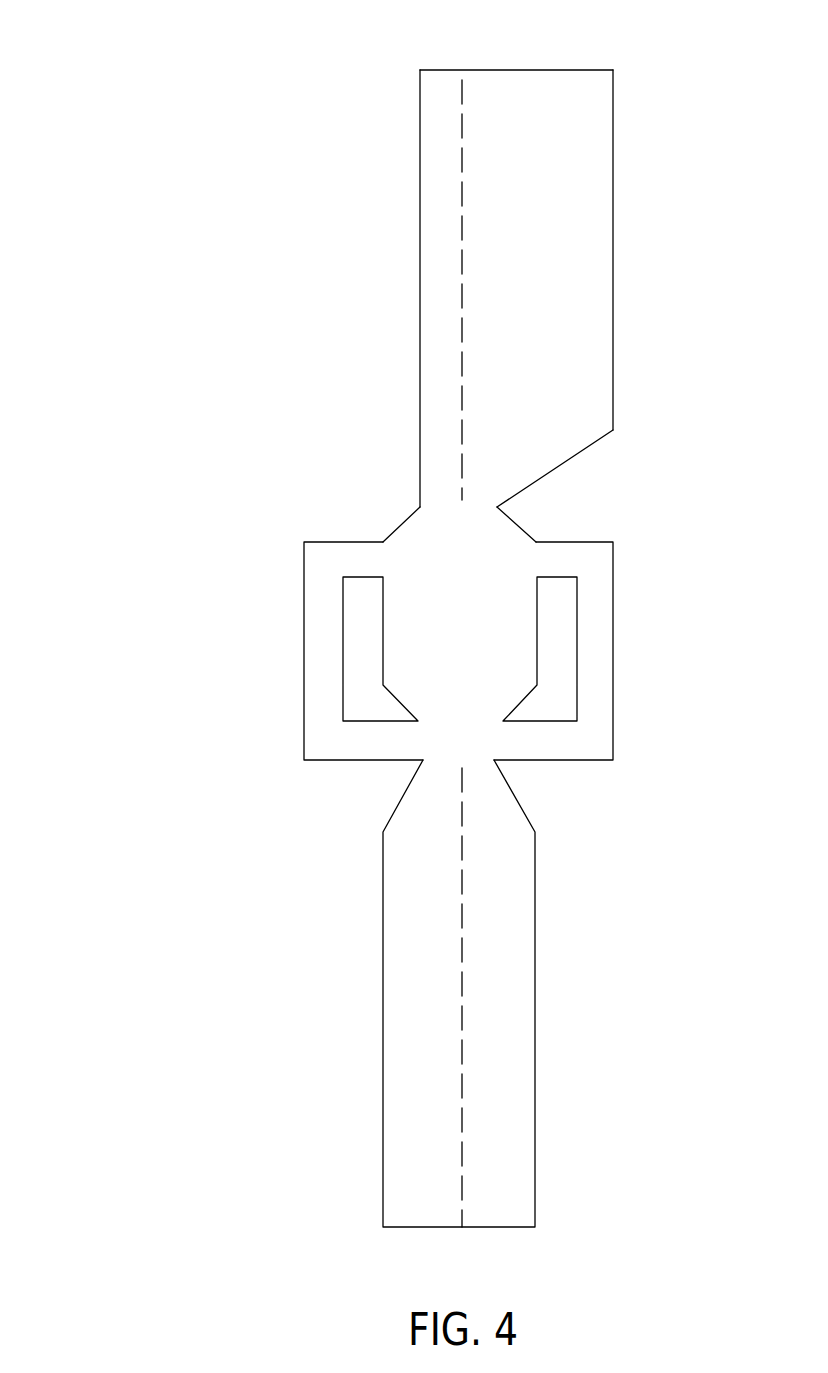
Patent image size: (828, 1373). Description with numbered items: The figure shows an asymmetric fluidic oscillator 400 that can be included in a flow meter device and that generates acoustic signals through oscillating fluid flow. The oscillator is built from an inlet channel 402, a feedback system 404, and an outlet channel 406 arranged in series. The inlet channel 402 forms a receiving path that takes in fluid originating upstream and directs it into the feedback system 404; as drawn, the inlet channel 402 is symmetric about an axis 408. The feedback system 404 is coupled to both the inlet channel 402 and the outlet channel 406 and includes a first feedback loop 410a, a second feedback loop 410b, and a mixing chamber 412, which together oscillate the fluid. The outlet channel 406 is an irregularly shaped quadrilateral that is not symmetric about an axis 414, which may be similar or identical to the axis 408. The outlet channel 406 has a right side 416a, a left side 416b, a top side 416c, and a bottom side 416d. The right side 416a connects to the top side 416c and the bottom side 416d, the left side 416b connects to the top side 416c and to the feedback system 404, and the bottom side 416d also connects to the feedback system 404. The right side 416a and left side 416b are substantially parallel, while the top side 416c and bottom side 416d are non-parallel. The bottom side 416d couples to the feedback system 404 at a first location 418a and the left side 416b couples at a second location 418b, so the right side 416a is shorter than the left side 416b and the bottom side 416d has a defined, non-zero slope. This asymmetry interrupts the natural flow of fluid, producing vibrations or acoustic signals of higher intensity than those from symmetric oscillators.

The asymmetric fluidic oscillator 400 is at (119, 98).
The inlet channel 402 is at (528, 995).
The feedback system 404 is at (249, 623).
The outlet channel 406 is at (614, 193).
The axis 408 is at (463, 1143).
The first feedback loop 410a is at (308, 726).
The second feedback loop 410b is at (601, 654).
The mixing chamber 412 is at (414, 595).
The axis 414 is at (461, 170).
The right side 416a is at (614, 278).
The left side 416b is at (419, 245).
The top side 416c is at (547, 70).
The bottom side 416d is at (580, 453).
The first location 418a is at (497, 507).
The second location 418b is at (418, 505).